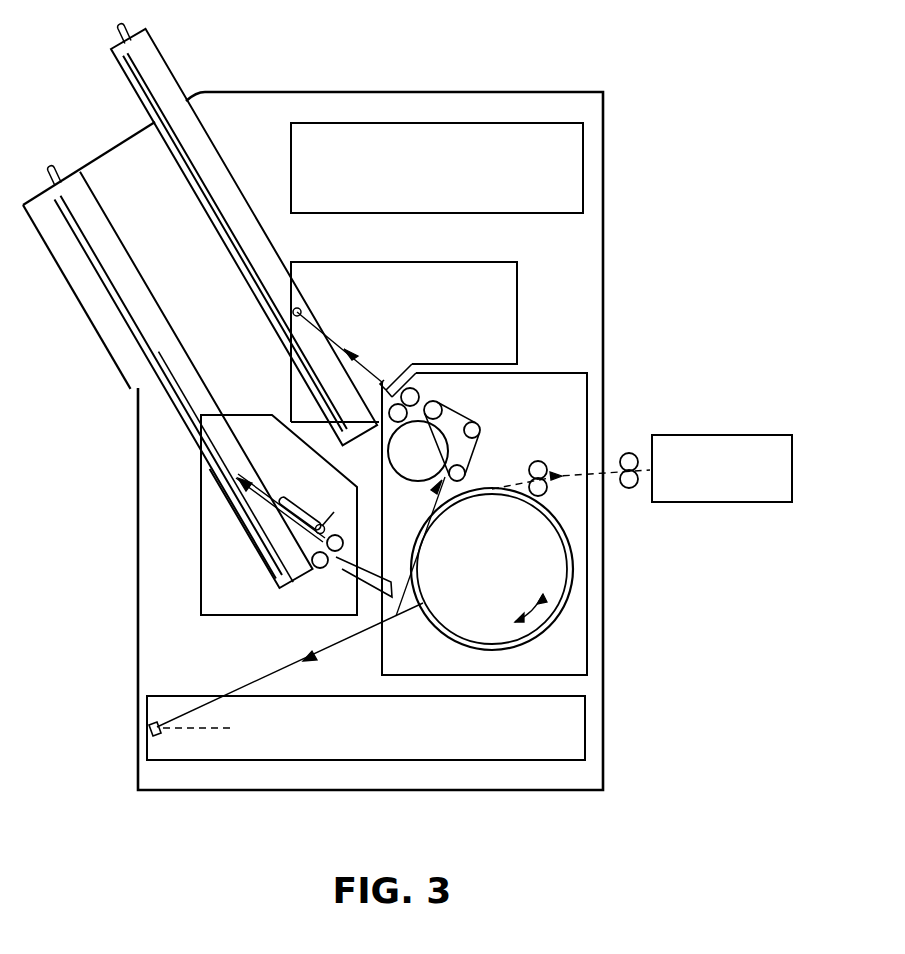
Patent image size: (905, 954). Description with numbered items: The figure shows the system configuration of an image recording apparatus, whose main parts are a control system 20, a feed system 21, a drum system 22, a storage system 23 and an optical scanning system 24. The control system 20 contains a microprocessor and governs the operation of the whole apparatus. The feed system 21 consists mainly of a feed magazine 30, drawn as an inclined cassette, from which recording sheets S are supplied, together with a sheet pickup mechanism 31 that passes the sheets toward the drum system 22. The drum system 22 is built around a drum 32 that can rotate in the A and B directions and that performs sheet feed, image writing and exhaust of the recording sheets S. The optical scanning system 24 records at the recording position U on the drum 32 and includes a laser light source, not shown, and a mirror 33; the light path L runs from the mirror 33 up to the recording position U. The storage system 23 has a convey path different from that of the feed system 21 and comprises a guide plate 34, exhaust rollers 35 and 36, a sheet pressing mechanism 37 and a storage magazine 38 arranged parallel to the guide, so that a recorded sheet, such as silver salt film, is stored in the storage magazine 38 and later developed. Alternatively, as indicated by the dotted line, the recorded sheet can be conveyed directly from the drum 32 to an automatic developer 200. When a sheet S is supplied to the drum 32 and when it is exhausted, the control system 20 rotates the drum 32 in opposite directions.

The control system 20 is at (447, 130).
The feed system 21 is at (505, 293).
The drum system 22 is at (570, 397).
The storage system 23 is at (213, 534).
The optical scanning system 24 is at (484, 742).
The feed magazine 30 is at (164, 61).
The sheet pickup mechanism 31 is at (408, 358).
The drum 32 is at (575, 560).
The mirror 33 is at (150, 736).
The guide plate 34 is at (372, 592).
The exhaust roller 35 is at (327, 551).
The exhaust roller 36 is at (316, 568).
The sheet pressing mechanism 37 is at (328, 511).
The storage magazine 38 is at (93, 193).
The automatic developer 200 is at (728, 435).
The recording sheet S is at (190, 165).
The light beam L is at (238, 690).
The recording position U is at (417, 612).